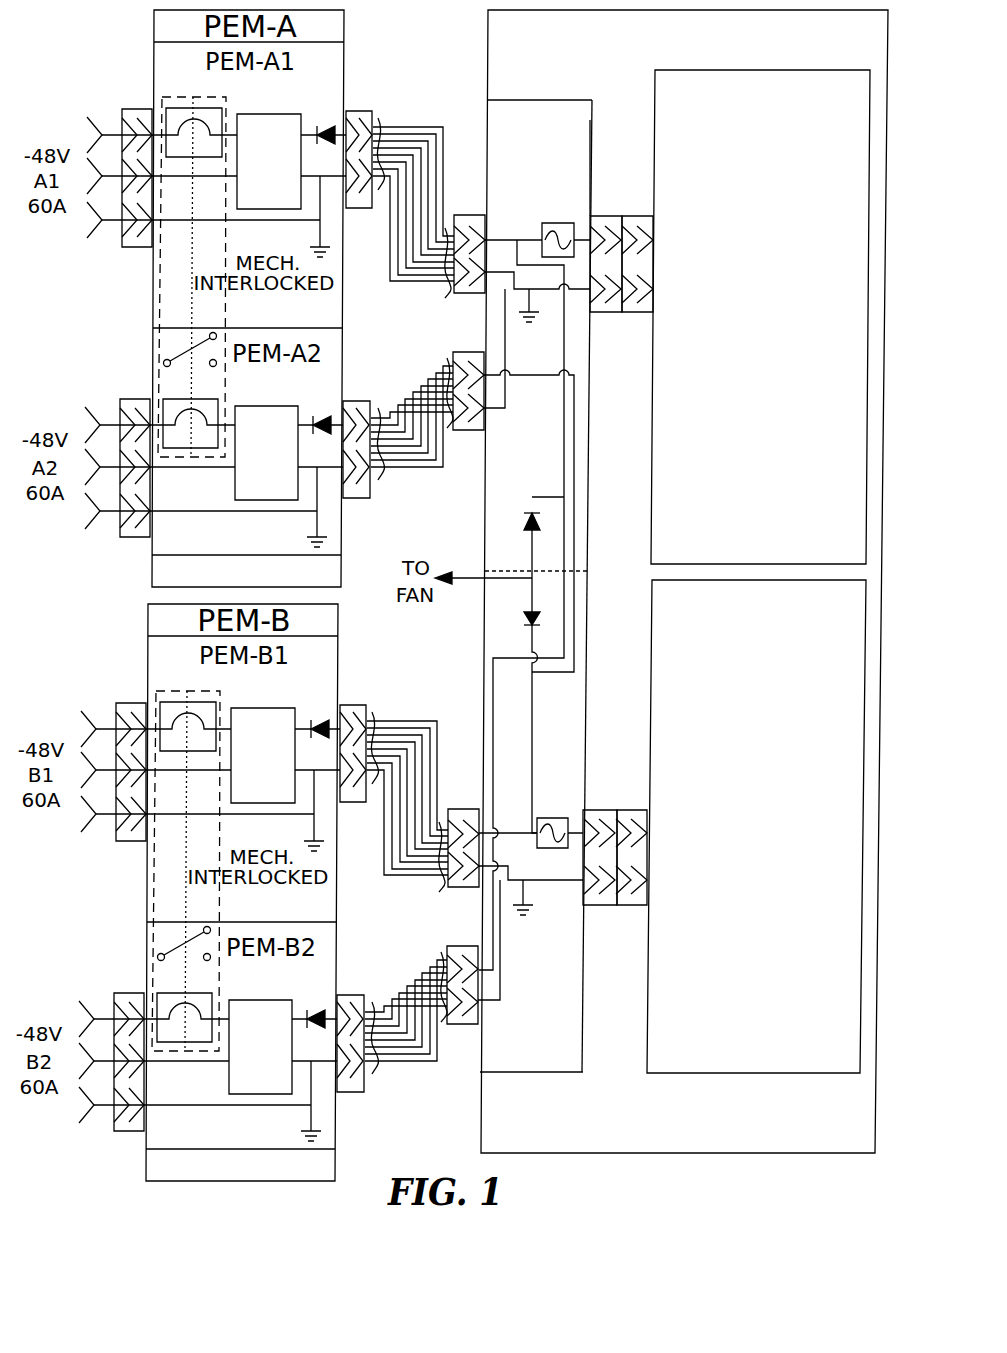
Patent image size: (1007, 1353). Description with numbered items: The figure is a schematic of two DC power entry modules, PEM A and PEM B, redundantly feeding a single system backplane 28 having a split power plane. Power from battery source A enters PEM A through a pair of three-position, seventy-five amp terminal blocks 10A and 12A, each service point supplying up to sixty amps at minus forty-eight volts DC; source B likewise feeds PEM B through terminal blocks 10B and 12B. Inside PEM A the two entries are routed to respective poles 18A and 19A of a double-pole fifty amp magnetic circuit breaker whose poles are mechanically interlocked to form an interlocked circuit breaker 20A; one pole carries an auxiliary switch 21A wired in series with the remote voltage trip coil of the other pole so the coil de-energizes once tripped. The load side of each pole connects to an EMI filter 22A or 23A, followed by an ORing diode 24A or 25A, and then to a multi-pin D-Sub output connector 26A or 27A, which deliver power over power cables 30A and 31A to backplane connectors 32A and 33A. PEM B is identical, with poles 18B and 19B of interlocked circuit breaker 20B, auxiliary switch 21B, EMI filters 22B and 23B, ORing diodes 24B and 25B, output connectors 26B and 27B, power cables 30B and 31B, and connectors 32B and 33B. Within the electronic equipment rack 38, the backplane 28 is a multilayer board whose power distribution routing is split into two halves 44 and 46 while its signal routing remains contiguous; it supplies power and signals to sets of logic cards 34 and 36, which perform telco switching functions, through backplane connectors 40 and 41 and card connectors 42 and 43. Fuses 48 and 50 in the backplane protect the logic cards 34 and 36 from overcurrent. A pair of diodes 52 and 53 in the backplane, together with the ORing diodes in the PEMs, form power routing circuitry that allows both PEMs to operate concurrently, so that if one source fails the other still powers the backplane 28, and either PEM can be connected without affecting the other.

The terminal block 10A is at (138, 108).
The terminal block 12A is at (130, 534).
The circuit breaker pole 18A is at (205, 108).
The circuit breaker pole 19A is at (203, 398).
The interlocked circuit breaker 20A is at (160, 282).
The auxiliary switch 21A is at (168, 355).
The auxiliary switch 21B is at (143, 954).
The EMI filter 22A is at (266, 116).
The EMI filter 23A is at (266, 404).
The ORing diode 24A is at (322, 128).
The ORing diode 25A is at (325, 420).
The D-Sub output connector 26A is at (350, 200).
The D-Sub output connector 27A is at (360, 499).
The power cable 30A is at (418, 128).
The power cable 31A is at (418, 470).
The connector 32A is at (468, 216).
The connector 33A is at (466, 350).
The terminal block 10B is at (105, 744).
The terminal block 12B is at (98, 1078).
The circuit breaker pole 18B is at (215, 713).
The circuit breaker pole 19B is at (211, 1001).
The interlocked circuit breaker 20B is at (155, 871).
The EMI filter 22B is at (279, 738).
The EMI filter 23B is at (279, 1027).
The ORing diode 24B is at (341, 700).
The ORing diode 25B is at (342, 989).
The D-Sub output connector 26B is at (360, 786).
The D-Sub output connector 27B is at (375, 1064).
The power cable 30B is at (419, 790).
The power cable 31B is at (417, 1027).
The connector 32B is at (459, 821).
The connector 33B is at (438, 963).
The system backplane 28 is at (595, 628).
The logic cards 34 is at (778, 76).
The logic cards 36 is at (718, 1067).
The electronic equipment rack 38 is at (481, 61).
The backplane connector 40 is at (598, 220).
The backplane connector 41 is at (598, 812).
The card connector 42 is at (632, 315).
The card connector 43 is at (626, 908).
The power distribution half 44 is at (594, 168).
The power distribution half 46 is at (583, 983).
The fuse 48 is at (556, 224).
The fuse 50 is at (542, 818).
The diode 52 is at (525, 514).
The diode 53 is at (532, 626).